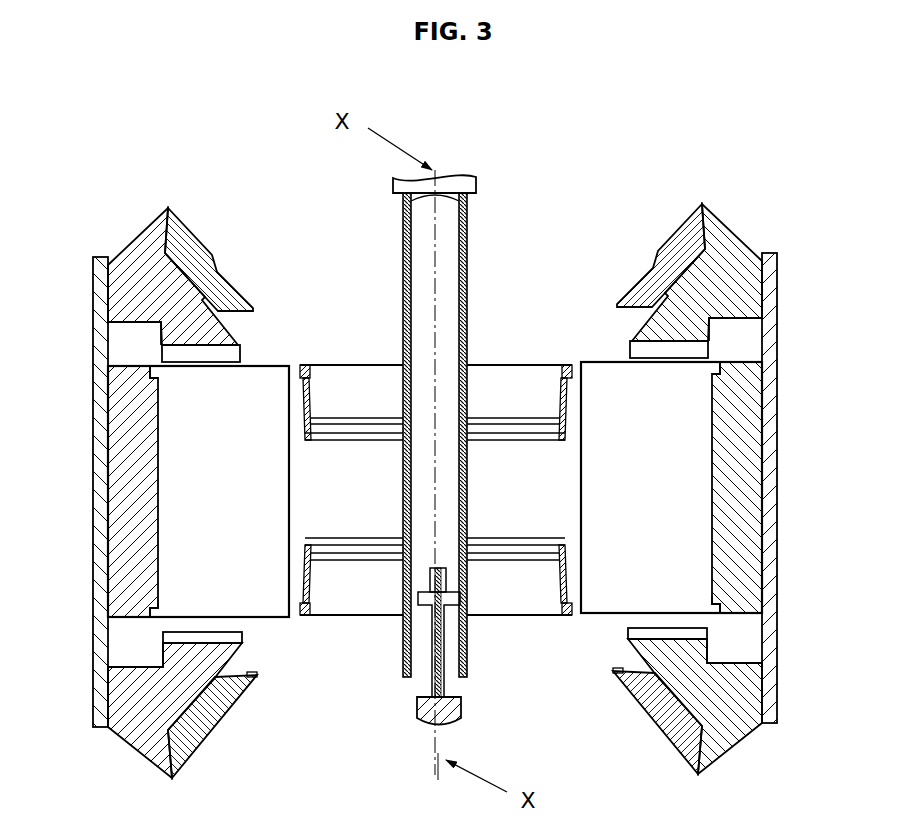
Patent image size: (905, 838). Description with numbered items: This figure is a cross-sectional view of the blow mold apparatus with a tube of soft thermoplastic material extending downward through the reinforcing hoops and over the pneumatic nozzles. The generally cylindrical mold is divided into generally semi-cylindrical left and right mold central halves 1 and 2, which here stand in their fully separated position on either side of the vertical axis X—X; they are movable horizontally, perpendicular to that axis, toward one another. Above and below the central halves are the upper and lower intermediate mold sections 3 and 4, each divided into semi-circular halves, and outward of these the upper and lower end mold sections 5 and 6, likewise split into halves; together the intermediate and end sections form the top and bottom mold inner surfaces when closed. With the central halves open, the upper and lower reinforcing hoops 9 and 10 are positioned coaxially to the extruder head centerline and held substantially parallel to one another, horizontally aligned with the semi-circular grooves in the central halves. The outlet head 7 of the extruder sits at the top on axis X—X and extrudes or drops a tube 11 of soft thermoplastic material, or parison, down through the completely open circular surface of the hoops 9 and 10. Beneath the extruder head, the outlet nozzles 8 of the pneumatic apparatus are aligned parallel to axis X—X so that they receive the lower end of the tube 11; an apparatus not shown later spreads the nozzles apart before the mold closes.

The left mold central half 1 is at (133, 457).
The right mold central half 2 is at (736, 490).
The upper intermediate mold section 3 is at (136, 264).
The lower intermediate mold section 4 is at (151, 714).
The upper end mold section 5 is at (206, 252).
The lower end mold section 6 is at (189, 731).
The extruder outlet head 7 is at (459, 178).
The pneumatic outlet nozzles 8 is at (424, 714).
The upper reinforcing hoop 9 is at (302, 364).
The lower reinforcing hoop 10 is at (311, 624).
The tube of soft thermoplastic material 11 is at (459, 252).